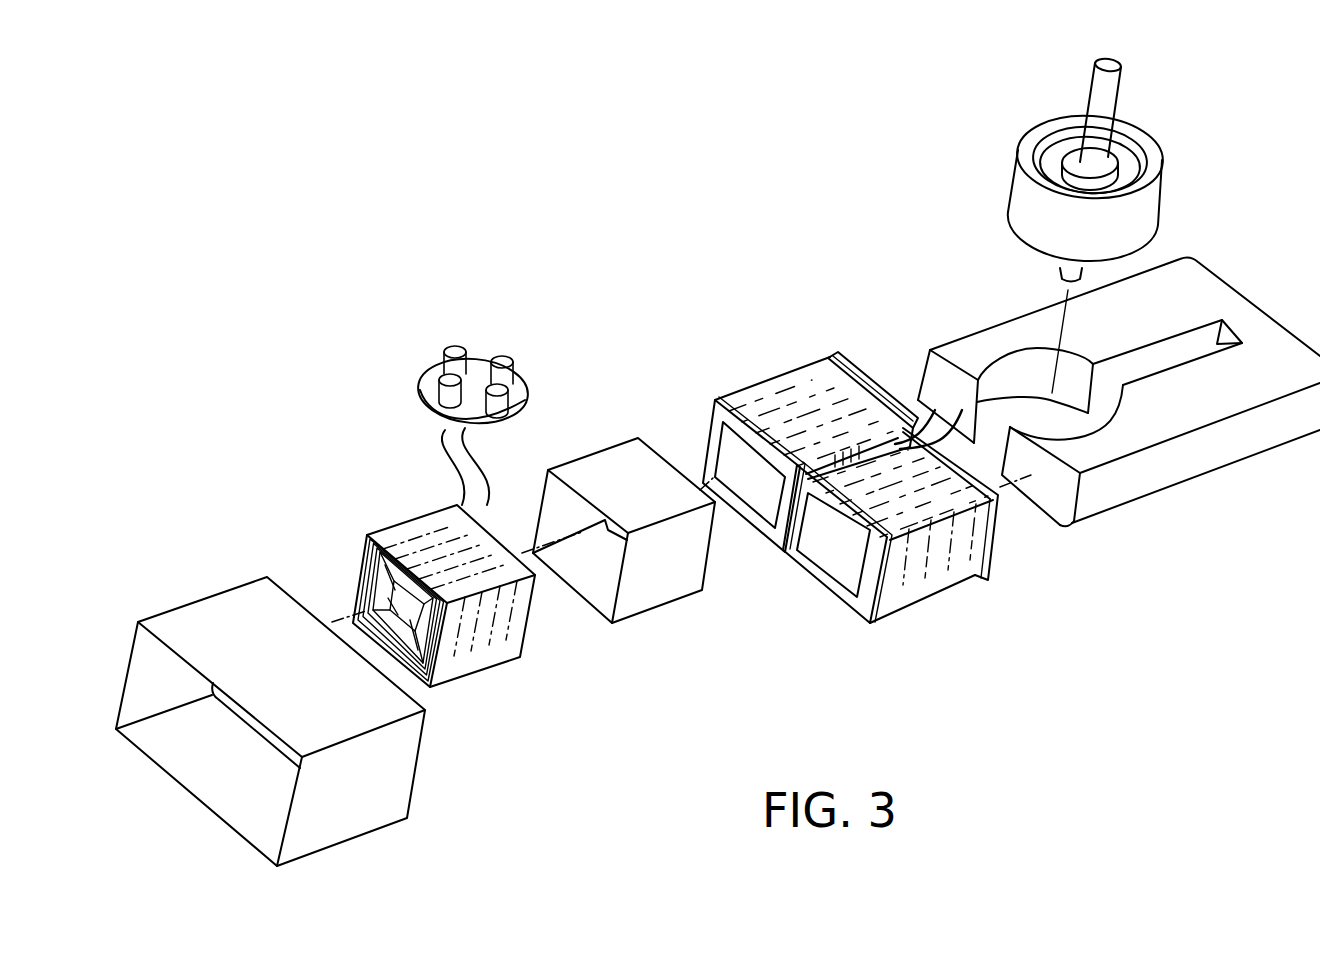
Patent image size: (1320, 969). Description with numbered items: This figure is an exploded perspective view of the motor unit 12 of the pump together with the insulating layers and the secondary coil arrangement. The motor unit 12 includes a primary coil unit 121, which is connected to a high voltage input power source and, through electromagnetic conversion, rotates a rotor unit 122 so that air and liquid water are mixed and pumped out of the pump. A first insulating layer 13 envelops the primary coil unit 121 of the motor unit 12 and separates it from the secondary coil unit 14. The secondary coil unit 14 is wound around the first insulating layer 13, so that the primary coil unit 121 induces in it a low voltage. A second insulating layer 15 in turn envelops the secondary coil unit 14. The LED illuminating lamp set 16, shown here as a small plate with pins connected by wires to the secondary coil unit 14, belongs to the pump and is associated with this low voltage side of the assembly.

The motor unit 12 is at (888, 235).
The primary coil unit 121 is at (760, 380).
The rotor unit 122 is at (1175, 178).
The first insulating layer 13 is at (587, 457).
The secondary coil unit 14 is at (395, 518).
The second insulating layer 15 is at (196, 591).
The LED illuminating lamp set 16 is at (428, 378).